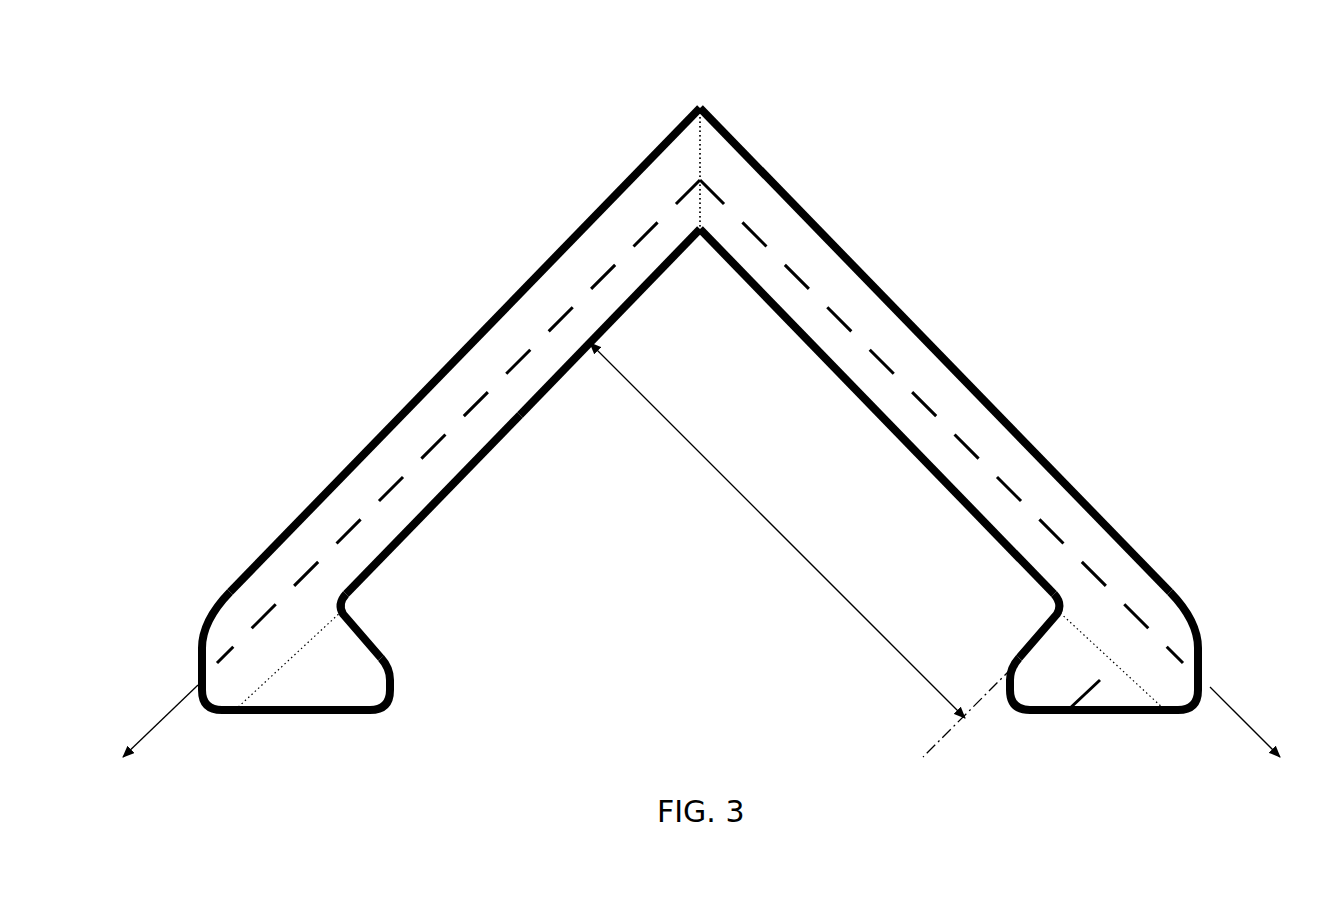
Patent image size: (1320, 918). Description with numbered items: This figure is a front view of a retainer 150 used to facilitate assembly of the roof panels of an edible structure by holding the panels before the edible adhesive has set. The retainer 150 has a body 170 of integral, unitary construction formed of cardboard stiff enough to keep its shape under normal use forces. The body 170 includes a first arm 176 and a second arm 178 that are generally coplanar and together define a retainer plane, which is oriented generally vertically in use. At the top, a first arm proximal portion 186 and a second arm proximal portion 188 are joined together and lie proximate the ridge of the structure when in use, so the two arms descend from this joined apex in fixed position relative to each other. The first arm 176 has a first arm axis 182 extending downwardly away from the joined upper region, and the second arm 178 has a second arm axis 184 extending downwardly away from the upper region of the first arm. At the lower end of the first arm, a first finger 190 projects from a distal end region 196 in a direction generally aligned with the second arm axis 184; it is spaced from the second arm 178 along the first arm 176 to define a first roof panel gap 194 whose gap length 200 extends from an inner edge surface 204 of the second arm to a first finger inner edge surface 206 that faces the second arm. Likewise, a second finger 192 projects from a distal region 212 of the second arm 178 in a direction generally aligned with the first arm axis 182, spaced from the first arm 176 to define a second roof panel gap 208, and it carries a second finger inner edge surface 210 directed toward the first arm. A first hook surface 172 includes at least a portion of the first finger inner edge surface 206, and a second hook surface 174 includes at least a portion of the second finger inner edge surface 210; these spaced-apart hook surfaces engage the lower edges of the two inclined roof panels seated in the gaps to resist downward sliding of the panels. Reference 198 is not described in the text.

The retainer 150 is at (947, 148).
The body 170 is at (988, 428).
The first hook surface 172 is at (1033, 645).
The second hook surface 174 is at (355, 630).
The first arm 176 is at (945, 385).
The second arm 178 is at (547, 300).
The first arm axis 182 is at (1255, 747).
The second arm axis 184 is at (155, 730).
The first arm proximal portion 186 is at (820, 188).
The second arm proximal portion 188 is at (610, 143).
The first finger 190 is at (1035, 695).
The second finger 192 is at (360, 697).
The first roof panel gap 194 is at (808, 390).
The distal end region of the first arm 196 is at (1168, 573).
The second foot width 198 is at (1025, 755).
The gap length 200 is at (780, 527).
The inner edge surface of the second arm 204 is at (505, 428).
The first finger inner edge surface 206 is at (1037, 640).
The second roof panel gap 208 is at (492, 505).
The second finger inner edge surface 210 is at (377, 652).
The distal region of the second arm 212 is at (238, 562).